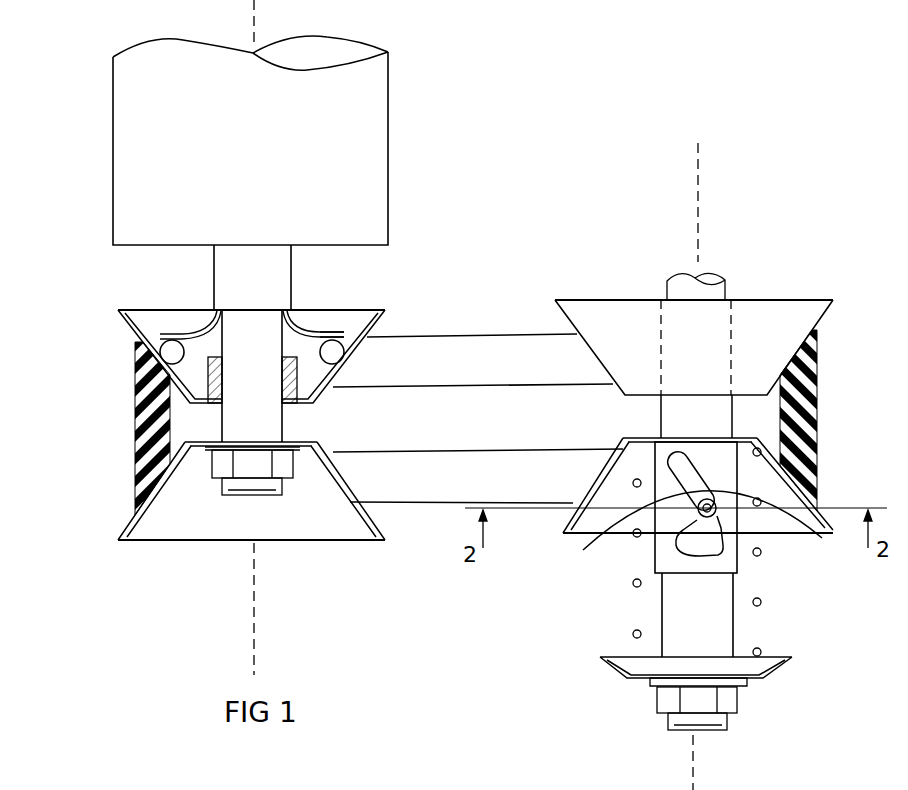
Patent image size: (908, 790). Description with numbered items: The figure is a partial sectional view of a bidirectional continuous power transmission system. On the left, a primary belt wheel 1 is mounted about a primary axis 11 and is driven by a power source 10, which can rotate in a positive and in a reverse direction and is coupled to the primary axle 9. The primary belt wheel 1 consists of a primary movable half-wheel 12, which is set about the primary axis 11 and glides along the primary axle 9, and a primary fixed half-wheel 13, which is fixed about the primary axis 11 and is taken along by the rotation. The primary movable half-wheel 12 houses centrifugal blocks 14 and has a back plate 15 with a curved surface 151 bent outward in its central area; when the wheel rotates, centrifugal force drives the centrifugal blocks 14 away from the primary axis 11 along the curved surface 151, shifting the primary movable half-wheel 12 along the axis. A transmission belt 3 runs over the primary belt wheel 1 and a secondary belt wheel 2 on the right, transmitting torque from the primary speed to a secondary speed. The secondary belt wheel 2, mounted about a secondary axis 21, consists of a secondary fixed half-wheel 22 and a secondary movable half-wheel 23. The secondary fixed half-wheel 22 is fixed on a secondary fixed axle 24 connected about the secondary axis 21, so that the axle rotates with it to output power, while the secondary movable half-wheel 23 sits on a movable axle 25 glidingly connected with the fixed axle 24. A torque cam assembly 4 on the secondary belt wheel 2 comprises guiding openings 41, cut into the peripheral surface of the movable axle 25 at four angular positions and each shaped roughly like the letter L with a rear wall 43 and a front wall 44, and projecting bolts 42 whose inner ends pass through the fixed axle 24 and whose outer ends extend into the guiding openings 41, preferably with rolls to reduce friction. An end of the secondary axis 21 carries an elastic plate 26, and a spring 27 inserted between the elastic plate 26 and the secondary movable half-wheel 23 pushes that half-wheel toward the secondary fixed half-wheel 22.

The primary belt wheel 1 is at (147, 296).
The secondary belt wheel 2 is at (727, 262).
The transmission belt 3 is at (417, 511).
The torque cam assembly 4 is at (665, 552).
The primary axle 9 is at (222, 281).
The power source 10 is at (133, 97).
The primary axis 11 is at (250, 617).
The primary movable half-wheel 12 is at (127, 317).
The primary fixed half-wheel 13 is at (130, 530).
The centrifugal blocks 14 is at (333, 343).
The back plate 15 is at (133, 325).
The curved surface 151 is at (304, 312).
The secondary axis 21 is at (698, 203).
The secondary fixed half-wheel 22 is at (577, 305).
The secondary movable half-wheel 23 is at (557, 533).
The secondary fixed axle 24 is at (720, 400).
The movable axle 25 is at (733, 552).
The elastic plate 26 is at (792, 657).
The spring 27 is at (633, 634).
The guiding openings 41 is at (740, 555).
The projecting bolts 42 is at (737, 522).
The rear wall 43 is at (719, 530).
The front wall 44 is at (612, 540).